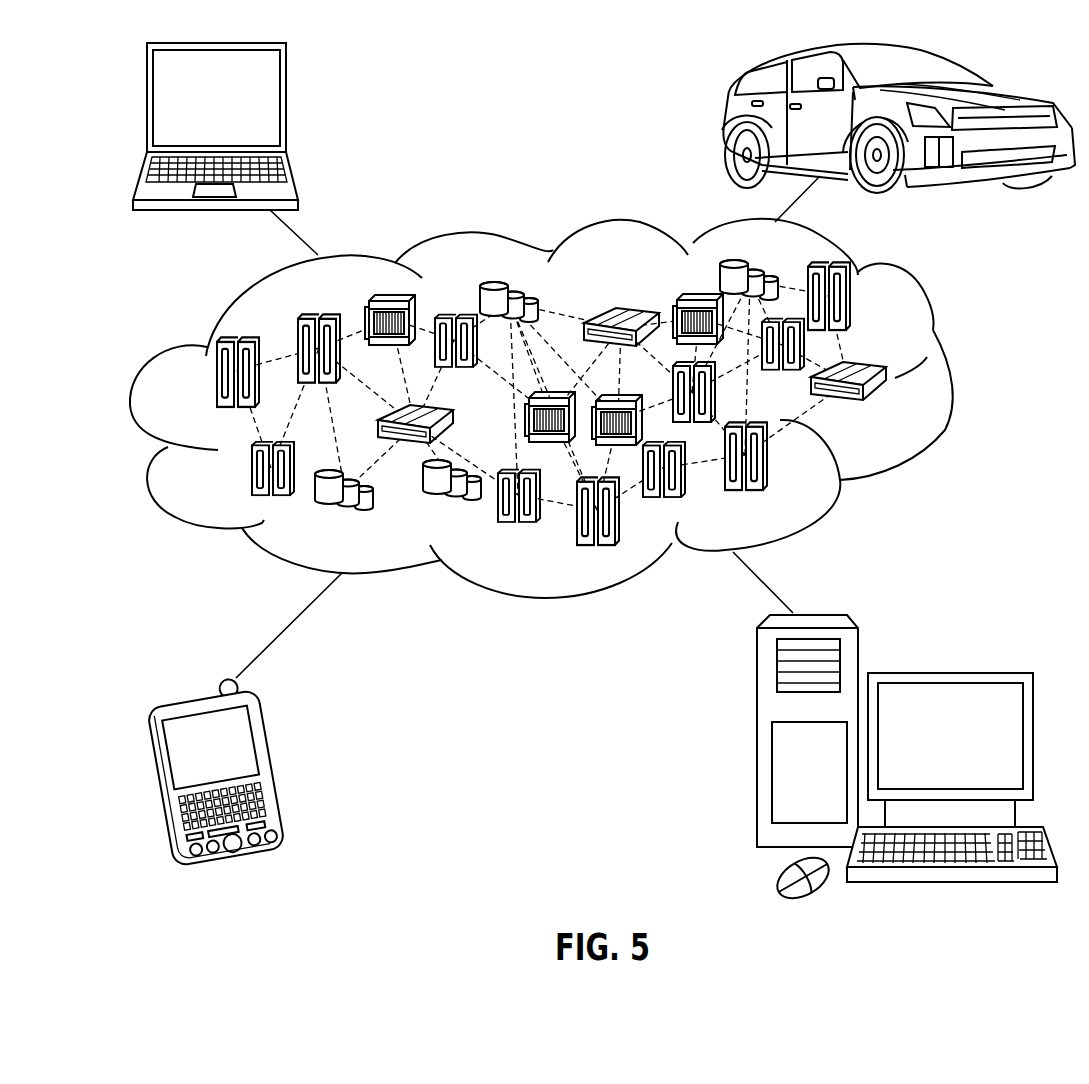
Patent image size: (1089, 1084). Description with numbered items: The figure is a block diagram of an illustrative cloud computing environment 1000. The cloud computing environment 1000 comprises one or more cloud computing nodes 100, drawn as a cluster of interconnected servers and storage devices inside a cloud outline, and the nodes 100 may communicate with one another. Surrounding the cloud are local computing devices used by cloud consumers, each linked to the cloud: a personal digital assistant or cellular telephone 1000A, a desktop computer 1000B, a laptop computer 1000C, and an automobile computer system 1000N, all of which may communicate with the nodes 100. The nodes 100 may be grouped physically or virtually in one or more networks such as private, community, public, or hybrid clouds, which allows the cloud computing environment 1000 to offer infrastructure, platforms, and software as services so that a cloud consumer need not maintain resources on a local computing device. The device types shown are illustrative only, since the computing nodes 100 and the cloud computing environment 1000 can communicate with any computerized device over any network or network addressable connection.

The cloud computing nodes 100 is at (893, 413).
The cloud computing environment 1000 is at (948, 383).
The personal digital assistant (PDA) or cellular telephone 1000A is at (277, 767).
The desktop computer 1000B is at (947, 672).
The laptop computer 1000C is at (286, 105).
The automobile computer system 1000N is at (727, 122).